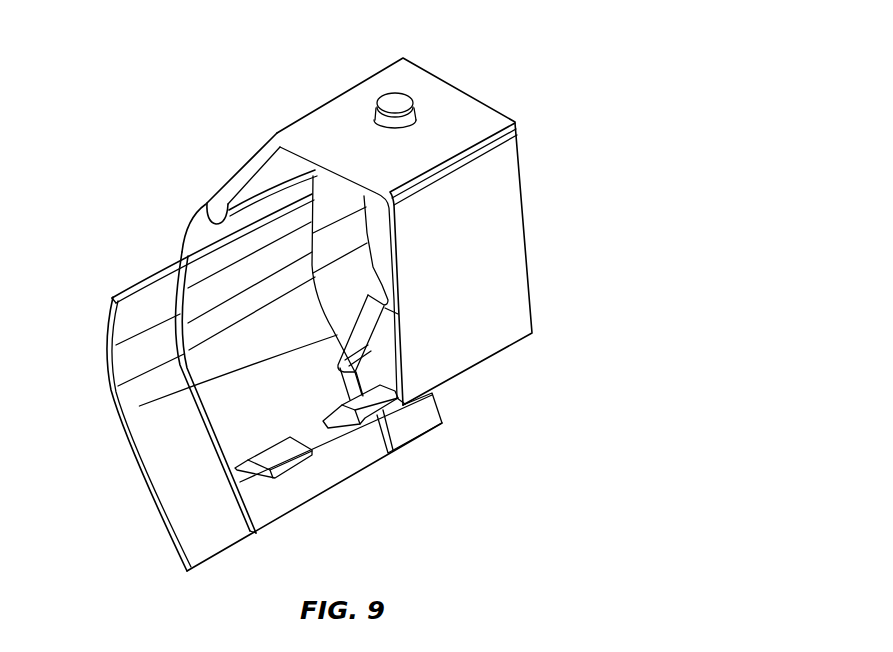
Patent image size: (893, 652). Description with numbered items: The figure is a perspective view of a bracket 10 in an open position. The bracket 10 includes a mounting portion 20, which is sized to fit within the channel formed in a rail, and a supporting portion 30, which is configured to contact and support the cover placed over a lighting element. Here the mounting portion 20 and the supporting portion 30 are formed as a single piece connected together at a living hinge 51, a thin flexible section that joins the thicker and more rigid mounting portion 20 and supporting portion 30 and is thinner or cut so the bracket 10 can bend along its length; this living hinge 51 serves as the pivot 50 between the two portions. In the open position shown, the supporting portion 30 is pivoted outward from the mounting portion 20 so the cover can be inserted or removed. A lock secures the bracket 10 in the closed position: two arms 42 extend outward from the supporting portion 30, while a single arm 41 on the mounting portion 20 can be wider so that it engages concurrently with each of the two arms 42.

The bracket 10 is at (578, 95).
The mounting portion 20 is at (407, 78).
The supporting portion 30 is at (175, 430).
The single arm 41 is at (139, 406).
The arms 42 is at (295, 457).
The pivot 50 is at (163, 225).
The living hinge 51 is at (182, 253).